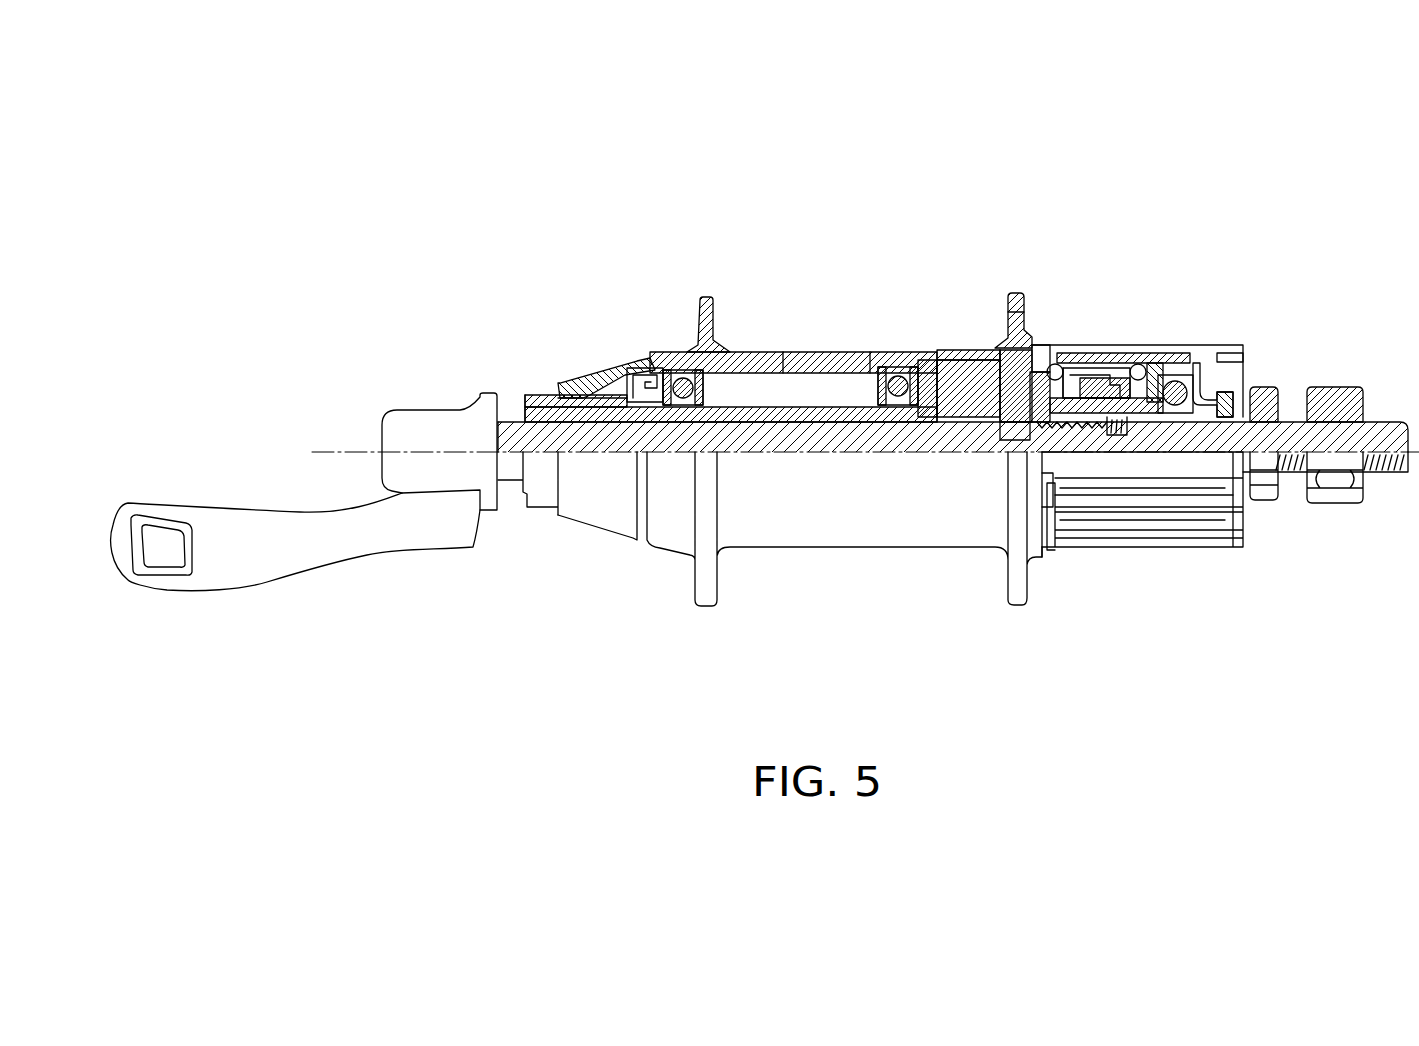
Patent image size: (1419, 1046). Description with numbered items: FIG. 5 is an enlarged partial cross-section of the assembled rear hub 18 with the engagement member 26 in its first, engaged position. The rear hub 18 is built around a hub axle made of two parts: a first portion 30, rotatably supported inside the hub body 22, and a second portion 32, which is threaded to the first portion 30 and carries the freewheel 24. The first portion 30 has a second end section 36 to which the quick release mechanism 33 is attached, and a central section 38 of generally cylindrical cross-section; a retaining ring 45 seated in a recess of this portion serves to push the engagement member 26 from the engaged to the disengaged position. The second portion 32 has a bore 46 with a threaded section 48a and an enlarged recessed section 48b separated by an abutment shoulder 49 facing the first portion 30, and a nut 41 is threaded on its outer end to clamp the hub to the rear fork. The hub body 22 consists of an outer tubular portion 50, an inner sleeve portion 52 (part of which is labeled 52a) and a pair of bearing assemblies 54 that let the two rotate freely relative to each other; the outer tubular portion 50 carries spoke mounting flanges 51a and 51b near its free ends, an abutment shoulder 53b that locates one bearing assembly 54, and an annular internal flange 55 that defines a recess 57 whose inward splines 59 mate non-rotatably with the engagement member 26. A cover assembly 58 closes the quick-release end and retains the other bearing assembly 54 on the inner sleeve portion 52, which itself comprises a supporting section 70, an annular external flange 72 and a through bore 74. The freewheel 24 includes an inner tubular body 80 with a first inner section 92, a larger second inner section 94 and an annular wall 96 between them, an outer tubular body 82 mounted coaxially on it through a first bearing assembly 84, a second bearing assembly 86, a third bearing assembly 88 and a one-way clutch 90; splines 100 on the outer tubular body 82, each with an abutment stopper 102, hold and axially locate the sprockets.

The rear hub 18 is at (1196, 248).
The hub body 22 is at (862, 303).
The freewheel 24 is at (1148, 556).
The engagement member 26 is at (970, 350).
The first portion 30 is at (519, 505).
The second portion 32 is at (1381, 482).
The quick release mechanism 33 is at (380, 440).
The second end section 36 is at (525, 398).
The central section 38 is at (928, 350).
The nut 41 is at (1345, 385).
The retaining ring 45 is at (1012, 465).
The bore 46 is at (1147, 450).
The threaded section 48a is at (1137, 442).
The enlarged recessed section 48b is at (1058, 447).
The abutment shoulder 49 is at (1075, 432).
The outer tubular portion 50 is at (840, 554).
The spoke mounting flange 51a is at (1025, 300).
The spoke mounting flange 51b is at (713, 298).
The inner sleeve portion 52 is at (797, 453).
The sleeve portion 52a is at (870, 352).
The abutment shoulder 53b is at (655, 365).
The bearing assembly 54 is at (705, 389).
The annular internal flange 55 is at (933, 447).
The recess 57 is at (975, 378).
The cover assembly 58 is at (576, 378).
The splines 59 is at (988, 350).
The supporting section 70 is at (783, 350).
The annular external flange 72 is at (915, 446).
The through bore 74 is at (602, 395).
The inner tubular body 80 is at (1113, 353).
The outer tubular body 82 is at (1140, 363).
The first bearing assembly 84 is at (1070, 350).
The second bearing assembly 86 is at (1165, 343).
The third bearing assembly 88 is at (1205, 380).
The one-way clutch 90 is at (1142, 442).
The first inner section 92 is at (1133, 360).
The second inner section 94 is at (1003, 453).
The annular wall 96 is at (1100, 353).
The splines 100 is at (1233, 527).
The abutment stopper 102 is at (1055, 542).